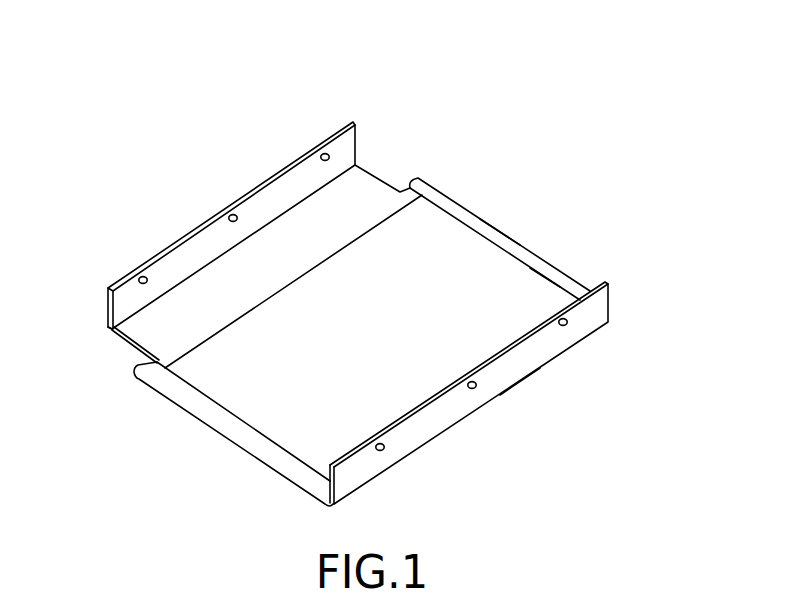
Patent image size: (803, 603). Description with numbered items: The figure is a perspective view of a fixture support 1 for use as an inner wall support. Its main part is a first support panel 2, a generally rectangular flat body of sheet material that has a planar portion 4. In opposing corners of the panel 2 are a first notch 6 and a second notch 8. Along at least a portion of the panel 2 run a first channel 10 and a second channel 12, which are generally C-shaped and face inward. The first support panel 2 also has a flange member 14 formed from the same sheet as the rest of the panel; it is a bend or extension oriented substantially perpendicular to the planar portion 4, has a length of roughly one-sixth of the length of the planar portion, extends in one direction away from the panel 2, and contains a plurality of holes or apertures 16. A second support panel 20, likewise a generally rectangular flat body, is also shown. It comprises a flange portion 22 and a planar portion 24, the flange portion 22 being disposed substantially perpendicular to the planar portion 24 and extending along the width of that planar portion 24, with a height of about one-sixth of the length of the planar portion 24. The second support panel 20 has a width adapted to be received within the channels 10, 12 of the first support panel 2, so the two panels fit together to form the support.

The tray assembly 1 is at (378, 261).
The first support panel 2 is at (382, 143).
The planar portion 4 is at (244, 284).
The first notch 6 is at (73, 329).
The second notch 8 is at (492, 208).
The first channel 10 is at (202, 434).
The second channel 12 is at (535, 230).
The flange member 14 is at (231, 201).
The holes or apertures 16 is at (379, 283).
The second support panel 20 is at (527, 393).
The flange portion 22 is at (547, 400).
The planar portion 24 is at (564, 257).